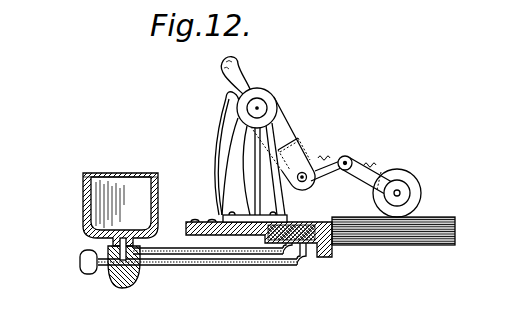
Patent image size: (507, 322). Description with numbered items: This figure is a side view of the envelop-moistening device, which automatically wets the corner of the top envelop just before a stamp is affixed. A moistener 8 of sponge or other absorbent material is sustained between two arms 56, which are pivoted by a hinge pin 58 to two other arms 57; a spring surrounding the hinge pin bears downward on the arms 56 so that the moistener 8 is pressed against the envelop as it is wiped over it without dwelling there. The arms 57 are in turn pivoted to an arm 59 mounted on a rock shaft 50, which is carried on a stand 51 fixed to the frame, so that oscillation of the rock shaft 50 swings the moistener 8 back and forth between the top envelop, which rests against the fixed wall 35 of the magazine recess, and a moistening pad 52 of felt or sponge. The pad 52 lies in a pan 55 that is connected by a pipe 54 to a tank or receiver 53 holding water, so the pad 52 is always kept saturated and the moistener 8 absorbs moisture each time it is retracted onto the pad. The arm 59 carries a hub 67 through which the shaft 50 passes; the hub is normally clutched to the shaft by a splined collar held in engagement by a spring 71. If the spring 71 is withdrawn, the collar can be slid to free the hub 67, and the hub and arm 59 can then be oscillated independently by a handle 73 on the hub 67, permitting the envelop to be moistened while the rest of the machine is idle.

The handle 73 is at (234, 68).
The hub 67 is at (277, 93).
The rock shaft 50 is at (257, 108).
The arm 59 is at (287, 133).
The spring 71 is at (217, 139).
The stand 51 is at (258, 158).
The hinge pin 58 is at (347, 160).
The arms 57 is at (326, 157).
The arms 56 is at (378, 175).
The moistener 8 is at (415, 184).
The tank or receiver 53 is at (85, 202).
The pipe 54 is at (190, 268).
The pan 55 is at (299, 243).
The moistening pad 52 is at (314, 243).
The fixed wall 35 is at (335, 257).